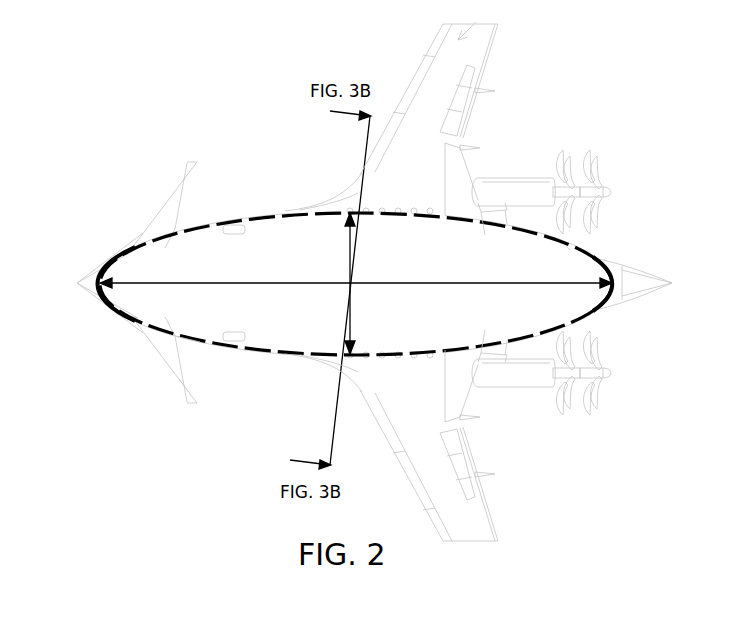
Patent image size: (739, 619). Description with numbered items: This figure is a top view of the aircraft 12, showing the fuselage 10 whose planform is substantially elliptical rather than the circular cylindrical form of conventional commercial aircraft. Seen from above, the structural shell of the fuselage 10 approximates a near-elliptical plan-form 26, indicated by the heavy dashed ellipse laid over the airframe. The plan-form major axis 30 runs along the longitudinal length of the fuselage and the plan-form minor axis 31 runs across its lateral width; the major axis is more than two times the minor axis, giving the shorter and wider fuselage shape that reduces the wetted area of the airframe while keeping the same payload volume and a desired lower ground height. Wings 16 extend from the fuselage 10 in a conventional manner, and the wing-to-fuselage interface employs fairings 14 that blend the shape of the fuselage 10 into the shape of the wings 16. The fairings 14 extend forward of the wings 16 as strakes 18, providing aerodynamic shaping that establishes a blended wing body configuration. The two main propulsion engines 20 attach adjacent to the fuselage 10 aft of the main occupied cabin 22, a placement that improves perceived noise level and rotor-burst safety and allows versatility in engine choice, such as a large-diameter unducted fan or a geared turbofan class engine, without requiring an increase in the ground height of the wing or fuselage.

The fuselage 10 is at (207, 222).
The aircraft 12 is at (545, 93).
The fairings 14 is at (372, 365).
The wings 16 is at (455, 53).
The strakes 18 is at (288, 350).
The main propulsion engines 20 is at (520, 170).
The main occupied cabin 22 is at (202, 265).
The near-elliptical plan-form 26 is at (566, 246).
The plan-form major axis 30 is at (133, 283).
The plan-form minor axis 31 is at (368, 242).